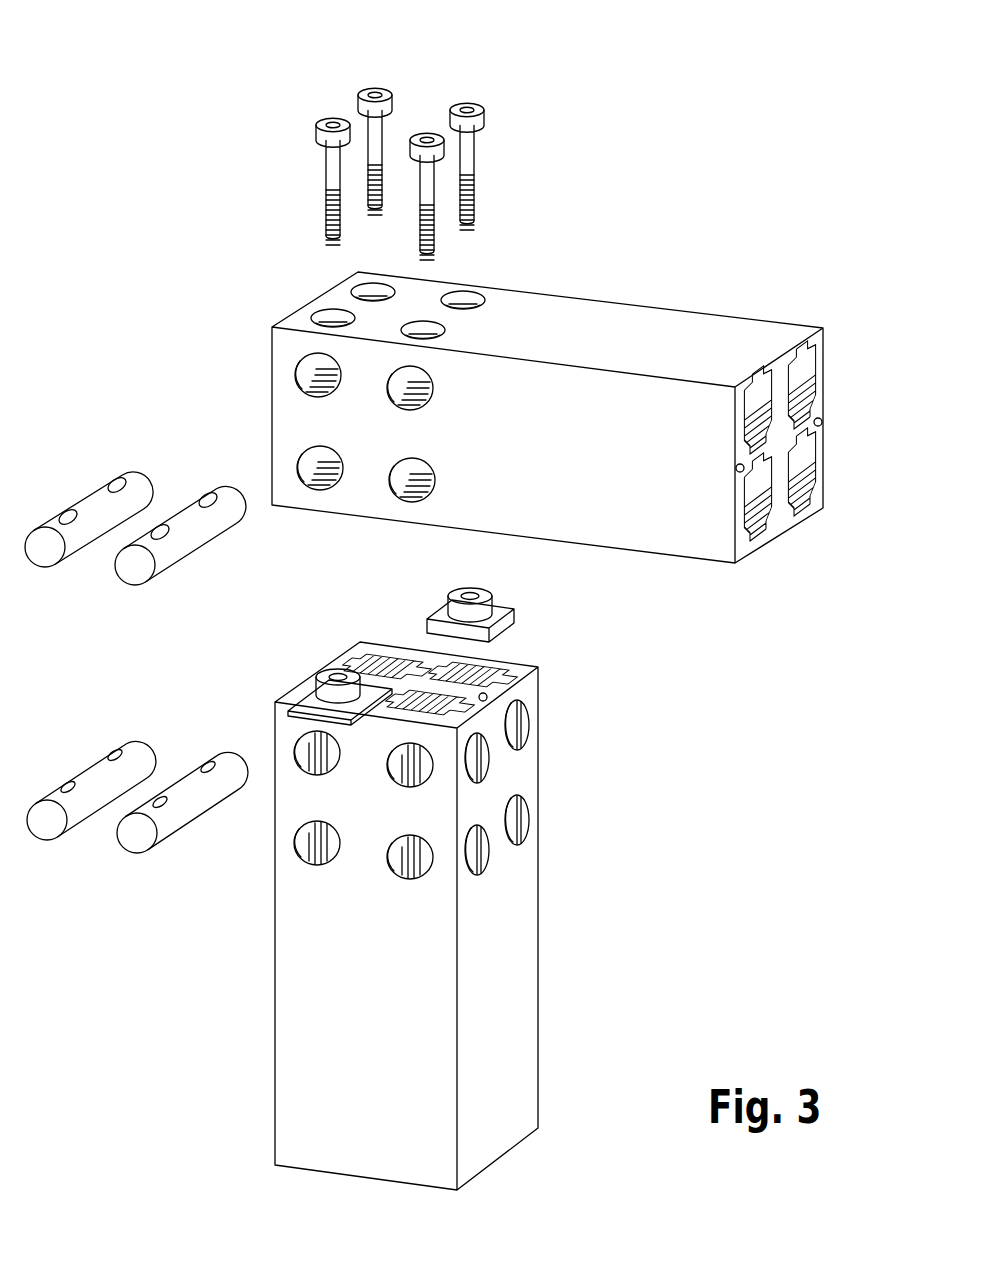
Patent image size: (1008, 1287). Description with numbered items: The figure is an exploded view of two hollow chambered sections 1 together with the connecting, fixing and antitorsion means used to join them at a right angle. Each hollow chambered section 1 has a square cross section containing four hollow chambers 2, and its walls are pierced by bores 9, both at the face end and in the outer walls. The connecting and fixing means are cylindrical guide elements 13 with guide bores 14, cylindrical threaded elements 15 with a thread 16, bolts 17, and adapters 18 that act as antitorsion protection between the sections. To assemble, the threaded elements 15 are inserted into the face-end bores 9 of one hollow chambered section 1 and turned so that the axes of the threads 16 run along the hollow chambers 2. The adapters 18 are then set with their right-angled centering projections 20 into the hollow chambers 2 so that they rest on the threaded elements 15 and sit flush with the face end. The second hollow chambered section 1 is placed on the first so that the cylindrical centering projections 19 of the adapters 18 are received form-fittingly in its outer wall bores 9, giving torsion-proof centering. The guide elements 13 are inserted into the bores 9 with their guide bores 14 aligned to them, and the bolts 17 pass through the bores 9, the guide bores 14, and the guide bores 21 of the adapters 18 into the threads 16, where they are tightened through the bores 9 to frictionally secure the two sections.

The hollow chambered section 1 is at (685, 307).
The hollow chamber 2 is at (758, 497).
The bore 9 is at (468, 300).
The cylindrical guide element 13 is at (135, 525).
The guide bore 14 is at (210, 503).
The cylindrical threaded element 15 is at (137, 795).
The thread 16 is at (207, 760).
The bolt 17 is at (372, 92).
The adapter 18 is at (452, 624).
The cylindrical centering projection 19 is at (462, 594).
The right-angled centering projection 20 is at (510, 630).
The guide bore 21 is at (484, 572).